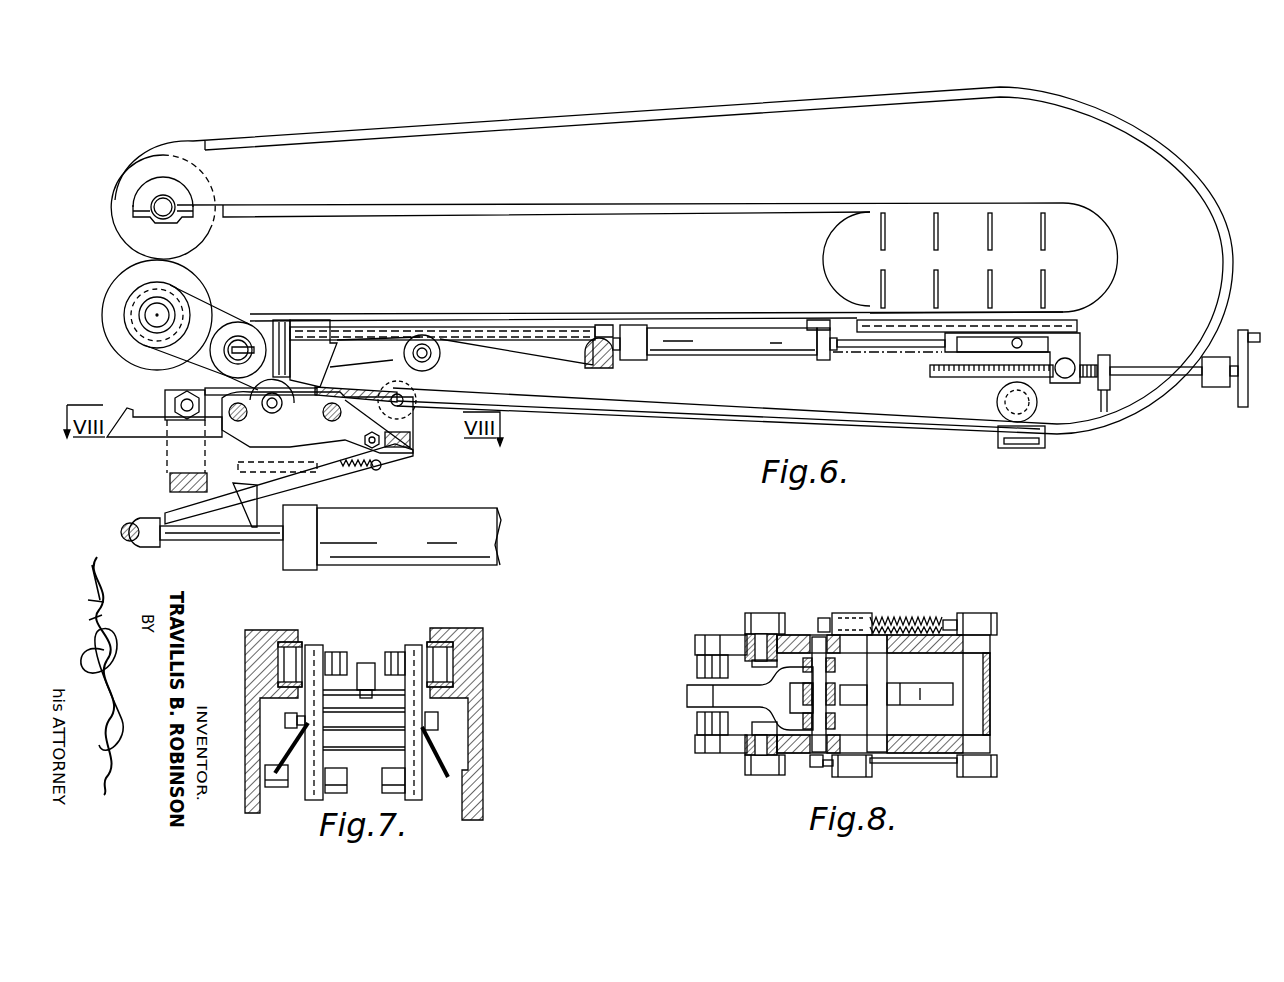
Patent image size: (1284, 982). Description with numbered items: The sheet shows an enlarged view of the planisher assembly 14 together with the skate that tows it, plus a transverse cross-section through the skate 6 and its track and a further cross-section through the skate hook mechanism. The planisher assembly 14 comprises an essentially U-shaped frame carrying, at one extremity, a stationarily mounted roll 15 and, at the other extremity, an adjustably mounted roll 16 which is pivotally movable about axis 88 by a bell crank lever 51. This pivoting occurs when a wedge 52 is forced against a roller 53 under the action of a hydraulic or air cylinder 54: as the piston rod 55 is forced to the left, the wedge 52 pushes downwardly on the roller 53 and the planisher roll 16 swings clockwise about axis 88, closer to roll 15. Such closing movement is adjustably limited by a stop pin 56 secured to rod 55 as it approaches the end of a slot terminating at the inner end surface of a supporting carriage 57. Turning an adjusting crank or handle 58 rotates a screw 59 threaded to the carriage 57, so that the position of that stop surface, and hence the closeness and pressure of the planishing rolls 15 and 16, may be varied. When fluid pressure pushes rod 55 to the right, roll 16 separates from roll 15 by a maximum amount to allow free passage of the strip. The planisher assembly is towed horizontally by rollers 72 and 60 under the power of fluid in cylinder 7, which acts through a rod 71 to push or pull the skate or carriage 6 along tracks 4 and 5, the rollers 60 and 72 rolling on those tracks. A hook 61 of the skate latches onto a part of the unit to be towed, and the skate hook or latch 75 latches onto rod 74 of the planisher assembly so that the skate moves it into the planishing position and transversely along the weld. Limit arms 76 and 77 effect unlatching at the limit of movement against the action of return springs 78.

In FIG. 7, the track 4 is at (288, 628).
In FIG. 7, the track 5 is at (452, 630).
In FIG. 7, the skate 6 is at (379, 626).
In FIG. 6, the fluid cylinder 7 is at (440, 507).
In FIG. 6, the planisher assembly 14 is at (830, 94).
In FIG. 6, the stationarily mounted roll 15 is at (122, 182).
In FIG. 6, the adjustably mounted roll 16 is at (117, 290).
In FIG. 6, the bell crank lever 51 is at (222, 312).
In FIG. 6, the wedge 52 is at (502, 350).
In FIG. 6, the roller 53 is at (441, 356).
In FIG. 6, the hydraulic cylinder 54 is at (720, 355).
In FIG. 6, the piston rod 55 is at (867, 348).
In FIG. 6, the stop pin 56 is at (1015, 348).
In FIG. 6, the supporting carriage 57 is at (947, 348).
In FIG. 6, the adjusting crank 58 is at (1242, 328).
In FIG. 6, the screw 59 is at (1092, 380).
In FIG. 6, the roller 60 is at (1037, 405).
In FIG. 6, the hook 61 is at (130, 405).
In FIG. 8, the hook 61 is at (686, 697).
In FIG. 6, the rod 71 is at (212, 542).
In FIG. 6, the roller 72 is at (185, 392).
In FIG. 8, the roller 72 is at (762, 613).
In FIG. 6, the rod 74 is at (337, 428).
In FIG. 6, the skate hook 75 is at (313, 443).
In FIG. 8, the skate hook 75 is at (953, 692).
In FIG. 6, the limit arm 76 is at (240, 500).
In FIG. 7, the limit arm 76 is at (283, 745).
In FIG. 7, the limit arm 77 is at (443, 755).
In FIG. 6, the return spring 78 is at (377, 470).
In FIG. 8, the return spring 78 is at (907, 617).
In FIG. 6, the axis 88 is at (240, 344).